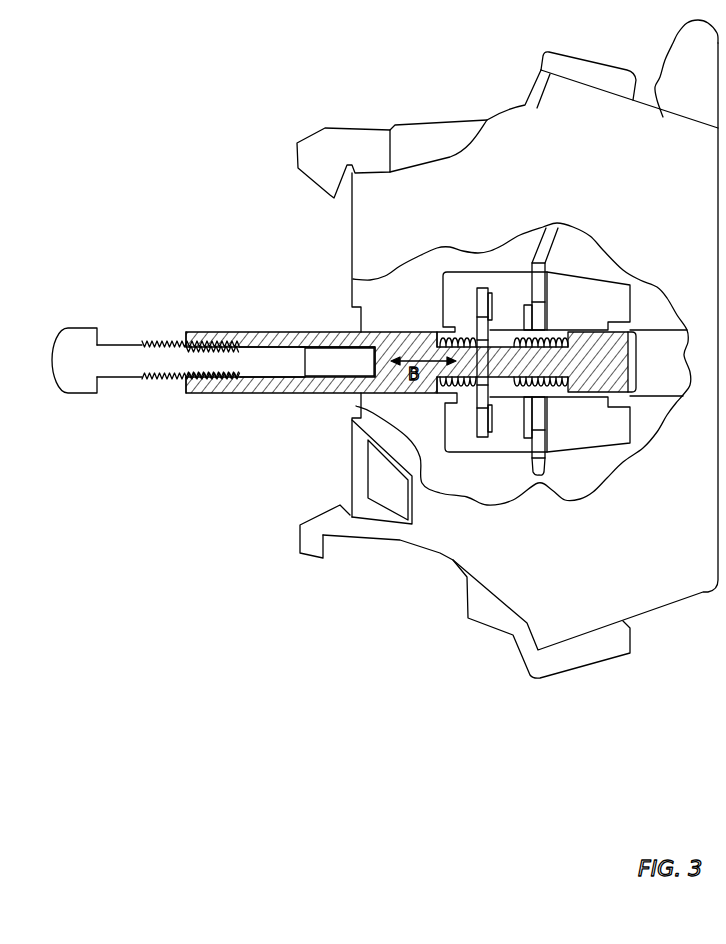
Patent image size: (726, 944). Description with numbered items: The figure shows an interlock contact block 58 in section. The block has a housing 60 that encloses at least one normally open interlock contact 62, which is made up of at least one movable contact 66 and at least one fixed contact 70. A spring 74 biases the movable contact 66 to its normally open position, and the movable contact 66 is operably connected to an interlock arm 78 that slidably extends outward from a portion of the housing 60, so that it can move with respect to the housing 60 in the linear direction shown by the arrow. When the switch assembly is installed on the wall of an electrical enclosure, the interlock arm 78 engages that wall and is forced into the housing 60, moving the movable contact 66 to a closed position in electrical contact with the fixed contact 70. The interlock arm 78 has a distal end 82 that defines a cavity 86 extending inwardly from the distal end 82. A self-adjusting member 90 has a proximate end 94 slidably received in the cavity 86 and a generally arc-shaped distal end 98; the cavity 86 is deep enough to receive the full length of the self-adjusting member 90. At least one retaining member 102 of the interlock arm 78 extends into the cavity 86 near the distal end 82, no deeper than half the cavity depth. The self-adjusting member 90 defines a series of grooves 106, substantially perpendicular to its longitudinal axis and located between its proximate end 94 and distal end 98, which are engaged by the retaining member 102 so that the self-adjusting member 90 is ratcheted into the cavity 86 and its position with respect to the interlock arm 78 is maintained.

The interlock contact block 58 is at (585, 194).
The housing 60 is at (530, 557).
The interlock contact 62 is at (500, 445).
The movable contact 66 is at (495, 304).
The fixed contact 70 is at (524, 306).
The spring 74 is at (550, 383).
The interlock arm 78 is at (307, 331).
The distal end 82 is at (187, 333).
The cavity 86 is at (337, 367).
The self-adjusting member 90 is at (280, 372).
The proximate end 94 is at (311, 358).
The distal end 98 is at (52, 362).
The retaining member 102 is at (230, 347).
The grooves 106 is at (160, 343).